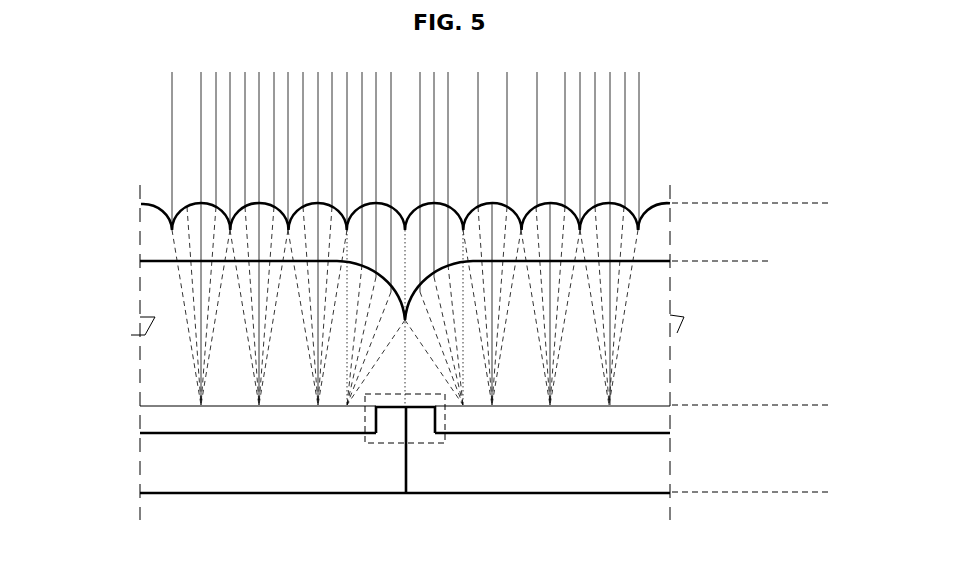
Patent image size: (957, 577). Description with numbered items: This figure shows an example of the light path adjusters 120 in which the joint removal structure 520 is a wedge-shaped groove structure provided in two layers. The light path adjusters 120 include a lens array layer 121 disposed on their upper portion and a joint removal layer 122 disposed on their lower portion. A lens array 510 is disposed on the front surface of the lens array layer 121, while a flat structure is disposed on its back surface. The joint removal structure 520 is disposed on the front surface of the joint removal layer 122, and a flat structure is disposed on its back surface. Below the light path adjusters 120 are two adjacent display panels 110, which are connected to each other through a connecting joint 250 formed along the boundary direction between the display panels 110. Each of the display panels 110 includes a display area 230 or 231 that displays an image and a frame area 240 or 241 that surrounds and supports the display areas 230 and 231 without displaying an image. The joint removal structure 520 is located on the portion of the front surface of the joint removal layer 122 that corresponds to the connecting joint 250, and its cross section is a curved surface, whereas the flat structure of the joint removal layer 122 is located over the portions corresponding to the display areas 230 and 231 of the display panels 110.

The lens array 510 is at (154, 219).
The joint removal structure 520 is at (377, 277).
The light path adjuster 120 is at (821, 203).
The lens array layer 121 is at (763, 203).
The joint removal layer 122 is at (763, 261).
The display panel 110 is at (821, 405).
The display area 230 is at (156, 421).
The display area 231 is at (660, 424).
The frame area 240 is at (156, 473).
The frame area 241 is at (660, 470).
The connecting joint 250 is at (425, 445).